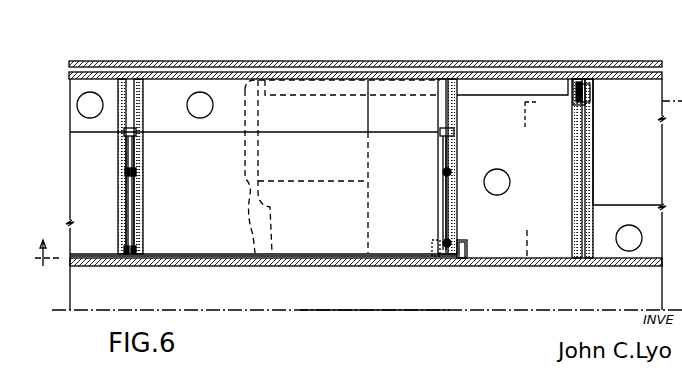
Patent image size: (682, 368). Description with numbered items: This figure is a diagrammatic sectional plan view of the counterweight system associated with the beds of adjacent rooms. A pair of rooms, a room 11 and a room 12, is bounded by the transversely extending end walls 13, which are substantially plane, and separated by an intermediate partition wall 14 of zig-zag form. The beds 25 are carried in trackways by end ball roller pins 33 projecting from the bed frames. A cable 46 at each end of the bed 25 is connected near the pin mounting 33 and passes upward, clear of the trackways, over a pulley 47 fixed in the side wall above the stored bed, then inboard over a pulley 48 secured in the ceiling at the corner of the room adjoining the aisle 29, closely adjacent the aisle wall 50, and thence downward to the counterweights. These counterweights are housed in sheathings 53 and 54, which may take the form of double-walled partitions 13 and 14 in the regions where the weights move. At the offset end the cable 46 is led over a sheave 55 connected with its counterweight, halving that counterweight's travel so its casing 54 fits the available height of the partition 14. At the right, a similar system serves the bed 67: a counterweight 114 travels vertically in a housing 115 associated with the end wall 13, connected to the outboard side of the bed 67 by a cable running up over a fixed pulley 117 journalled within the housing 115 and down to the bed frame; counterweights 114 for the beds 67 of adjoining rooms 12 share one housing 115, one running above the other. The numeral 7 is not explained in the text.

The bed 67 is at (502, 86).
The fixed pulley 117 is at (580, 85).
The housing 115 is at (570, 98).
The counterweight 114 is at (573, 104).
The end wall 13 is at (130, 113).
The ball roller pin 33 is at (141, 132).
The intermediate partition wall 14 is at (454, 130).
The pulley 47 is at (135, 171).
The cable 46 is at (137, 189).
The sheathing 53 is at (140, 243).
The pulley 48 is at (140, 253).
The bed 25 is at (407, 278).
The aisle wall 50 is at (318, 263).
The aisle 29 is at (384, 305).
The sheathing 54 is at (442, 243).
The sheave 55 is at (453, 260).
The room 11 is at (145, 105).
The room 12 is at (563, 210).
The height dimension 7 is at (40, 249).